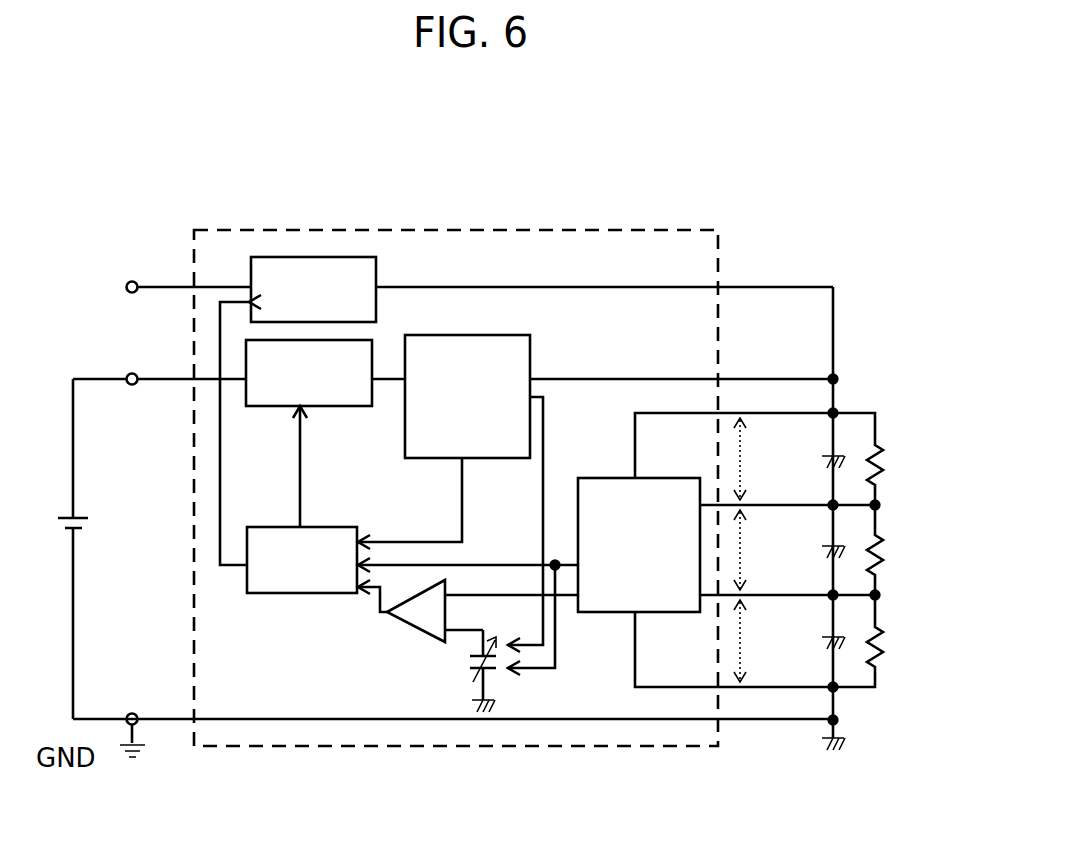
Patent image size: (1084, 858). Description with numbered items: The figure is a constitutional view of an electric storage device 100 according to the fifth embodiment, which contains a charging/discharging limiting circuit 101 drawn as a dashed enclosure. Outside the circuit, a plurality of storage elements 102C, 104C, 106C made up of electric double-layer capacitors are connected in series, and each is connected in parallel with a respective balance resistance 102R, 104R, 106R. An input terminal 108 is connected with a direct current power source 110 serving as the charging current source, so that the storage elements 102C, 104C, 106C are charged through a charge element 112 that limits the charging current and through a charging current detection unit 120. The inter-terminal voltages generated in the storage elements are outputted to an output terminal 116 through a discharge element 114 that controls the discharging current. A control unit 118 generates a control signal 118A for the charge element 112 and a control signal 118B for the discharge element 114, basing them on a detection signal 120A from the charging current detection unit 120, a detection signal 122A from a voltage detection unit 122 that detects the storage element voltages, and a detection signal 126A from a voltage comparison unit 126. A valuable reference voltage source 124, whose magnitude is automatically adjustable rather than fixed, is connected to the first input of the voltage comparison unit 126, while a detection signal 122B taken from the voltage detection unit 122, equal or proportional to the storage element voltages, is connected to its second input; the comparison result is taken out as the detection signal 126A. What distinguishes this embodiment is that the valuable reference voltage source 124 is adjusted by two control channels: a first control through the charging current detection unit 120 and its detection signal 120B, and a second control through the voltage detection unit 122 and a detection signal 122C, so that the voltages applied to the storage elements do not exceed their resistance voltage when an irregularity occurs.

The electric storage device 100 is at (725, 160).
The charging/discharging limiting circuit 101 is at (532, 227).
The storage element 102C is at (787, 459).
The storage element 104C is at (787, 550).
The storage element 106C is at (786, 641).
The balance resistance 102R is at (890, 443).
The balance resistance 104R is at (888, 557).
The balance resistance 106R is at (880, 662).
The input terminal 108 is at (125, 377).
The direct current power source 110 is at (93, 516).
The charge element 112 is at (375, 358).
The discharge element 114 is at (378, 273).
The output terminal 116 is at (125, 283).
The control unit 118 is at (252, 595).
The control signal 118A is at (300, 498).
The control signal 118B is at (222, 497).
The charging current detection unit 120 is at (532, 350).
The detection signal 120A is at (458, 475).
The detection signal 120B is at (543, 433).
The voltage detection unit 122 is at (590, 477).
The detection signal 122A is at (493, 562).
The detection signal 122B is at (450, 597).
The detection signal 122C is at (545, 665).
The valuable reference voltage source 124 is at (470, 667).
The voltage comparison unit 126 is at (410, 627).
The detection signal 126A is at (378, 601).